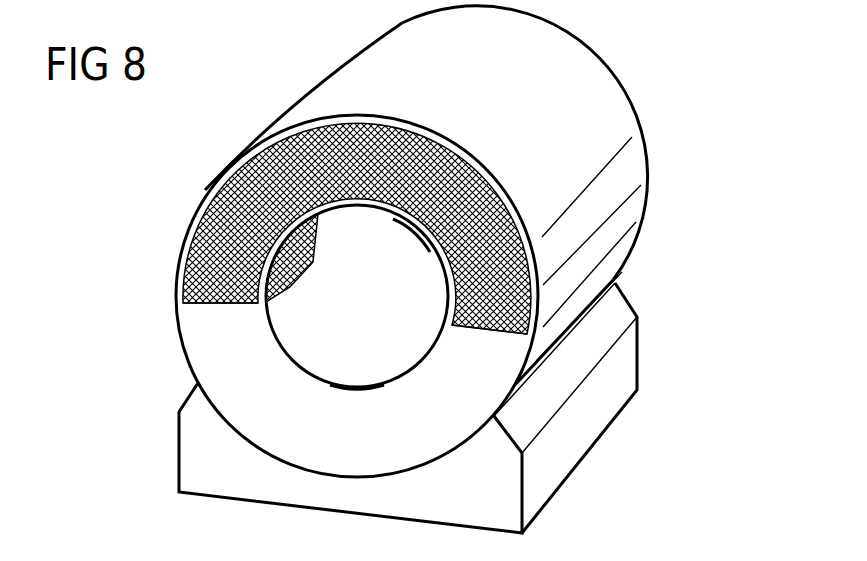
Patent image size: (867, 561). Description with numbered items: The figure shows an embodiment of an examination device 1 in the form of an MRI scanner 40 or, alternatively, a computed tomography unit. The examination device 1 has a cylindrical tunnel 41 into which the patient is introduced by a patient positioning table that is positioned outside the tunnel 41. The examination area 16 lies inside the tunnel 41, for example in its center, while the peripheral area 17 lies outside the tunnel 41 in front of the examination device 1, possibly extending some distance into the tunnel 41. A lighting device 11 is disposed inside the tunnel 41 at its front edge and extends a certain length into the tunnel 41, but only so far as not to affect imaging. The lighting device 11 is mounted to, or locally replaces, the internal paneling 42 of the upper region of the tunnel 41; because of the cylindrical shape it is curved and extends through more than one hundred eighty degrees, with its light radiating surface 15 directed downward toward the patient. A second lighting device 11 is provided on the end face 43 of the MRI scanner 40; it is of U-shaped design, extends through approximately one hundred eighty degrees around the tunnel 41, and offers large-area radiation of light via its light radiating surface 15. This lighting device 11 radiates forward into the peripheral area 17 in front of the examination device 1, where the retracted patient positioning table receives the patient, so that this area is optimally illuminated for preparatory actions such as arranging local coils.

The examination device 1 is at (646, 78).
The MRI scanner 40 is at (295, 100).
The lighting device 11 is at (202, 191).
The light radiating surface 15 is at (197, 243).
The end face 43 is at (208, 318).
The peripheral area 17 is at (191, 370).
The examination area 16 is at (331, 344).
The tunnel 41 is at (366, 367).
The internal paneling 42 is at (428, 334).